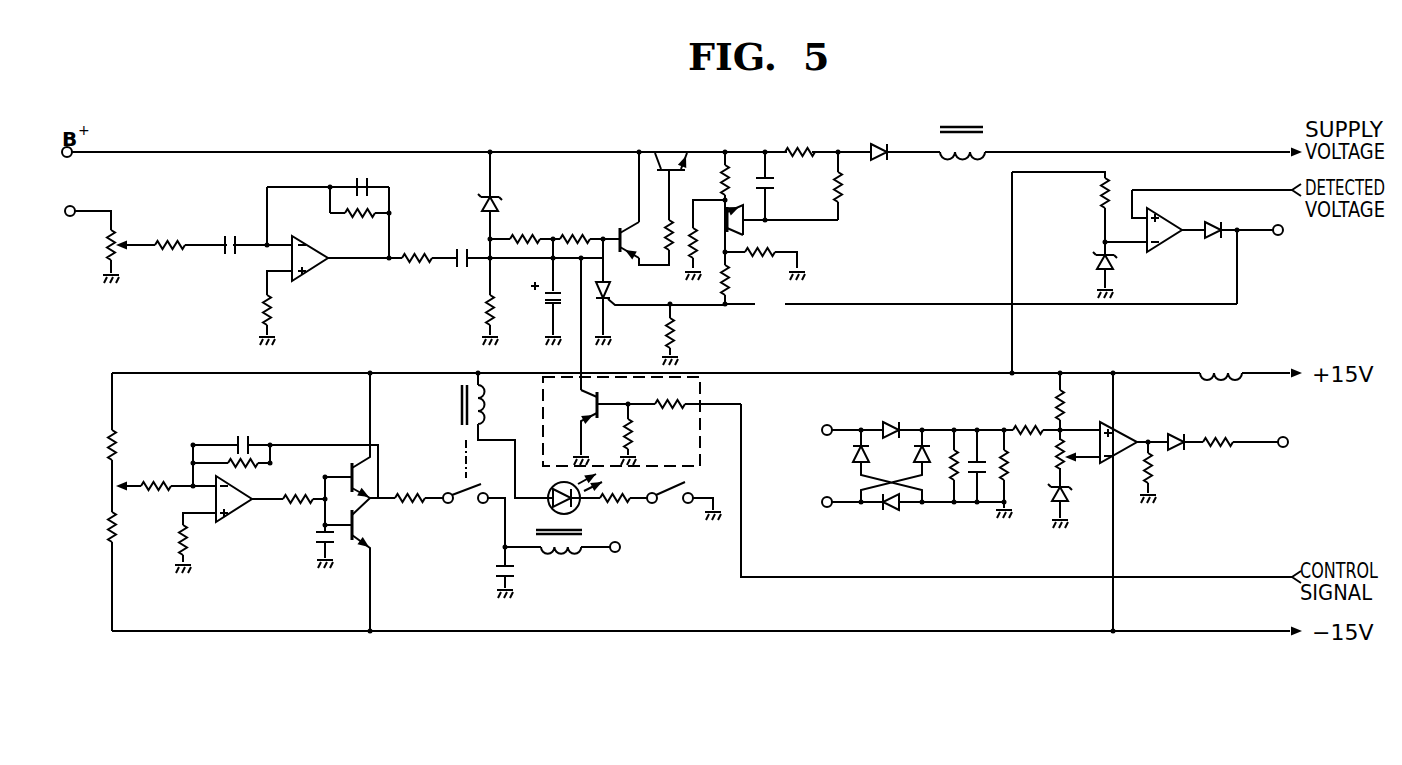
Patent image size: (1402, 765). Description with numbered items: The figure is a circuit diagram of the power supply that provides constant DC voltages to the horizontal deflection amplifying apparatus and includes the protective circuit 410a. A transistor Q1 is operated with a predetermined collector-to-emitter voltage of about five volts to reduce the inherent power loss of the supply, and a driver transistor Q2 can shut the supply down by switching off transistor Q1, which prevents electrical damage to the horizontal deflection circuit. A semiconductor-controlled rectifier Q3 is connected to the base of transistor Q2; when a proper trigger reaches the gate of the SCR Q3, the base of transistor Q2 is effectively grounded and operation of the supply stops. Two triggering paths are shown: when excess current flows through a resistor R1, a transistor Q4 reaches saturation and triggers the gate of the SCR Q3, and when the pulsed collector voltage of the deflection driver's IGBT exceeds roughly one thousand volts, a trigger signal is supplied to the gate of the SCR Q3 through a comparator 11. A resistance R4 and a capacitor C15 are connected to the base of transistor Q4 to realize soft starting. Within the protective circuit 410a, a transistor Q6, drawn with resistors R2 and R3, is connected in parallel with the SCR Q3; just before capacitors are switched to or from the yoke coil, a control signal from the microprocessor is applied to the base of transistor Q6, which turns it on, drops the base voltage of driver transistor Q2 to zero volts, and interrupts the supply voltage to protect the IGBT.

The transistor Q1 is at (664, 196).
The driver transistor Q2 is at (630, 205).
The semiconductor-controlled rectifier (SCR) Q3 is at (660, 301).
The transistor Q4 is at (761, 228).
The transistor Q6 is at (589, 427).
The resistor R1 is at (800, 139).
The resistor R2 is at (640, 434).
The resistor R3 is at (746, 383).
The resistance R4 is at (852, 186).
The capacitor C15 is at (783, 186).
The comparator 11 is at (1167, 243).
The protective circuit 410a is at (672, 421).